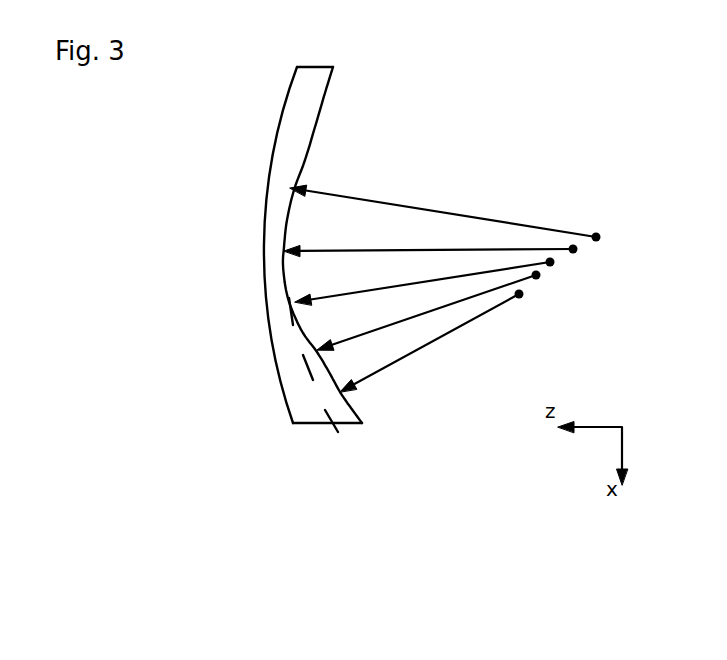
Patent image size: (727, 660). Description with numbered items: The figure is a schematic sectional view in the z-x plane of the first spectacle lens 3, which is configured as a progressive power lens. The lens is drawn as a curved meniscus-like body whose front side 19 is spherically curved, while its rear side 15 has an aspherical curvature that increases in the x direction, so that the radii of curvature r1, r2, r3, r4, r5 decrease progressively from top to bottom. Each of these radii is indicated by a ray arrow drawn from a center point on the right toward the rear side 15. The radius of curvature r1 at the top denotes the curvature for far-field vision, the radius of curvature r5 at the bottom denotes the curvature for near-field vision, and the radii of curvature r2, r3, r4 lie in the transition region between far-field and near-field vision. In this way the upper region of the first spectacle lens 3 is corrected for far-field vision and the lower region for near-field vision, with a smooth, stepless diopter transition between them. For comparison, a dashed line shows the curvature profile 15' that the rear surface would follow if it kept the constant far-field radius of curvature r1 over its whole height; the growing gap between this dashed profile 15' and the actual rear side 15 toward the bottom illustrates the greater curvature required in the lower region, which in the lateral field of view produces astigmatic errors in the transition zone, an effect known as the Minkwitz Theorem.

The first spectacle lens 3 is at (265, 303).
The rear side 15 is at (343, 245).
The curvature profile with constant radius of curvature 15' is at (288, 389).
The front side 19 is at (283, 391).
The radius of curvature r1 is at (347, 193).
The radius of curvature r2 is at (327, 250).
The radius of curvature r3 is at (330, 297).
The radius of curvature r4 is at (348, 338).
The radius of curvature r5 is at (403, 358).